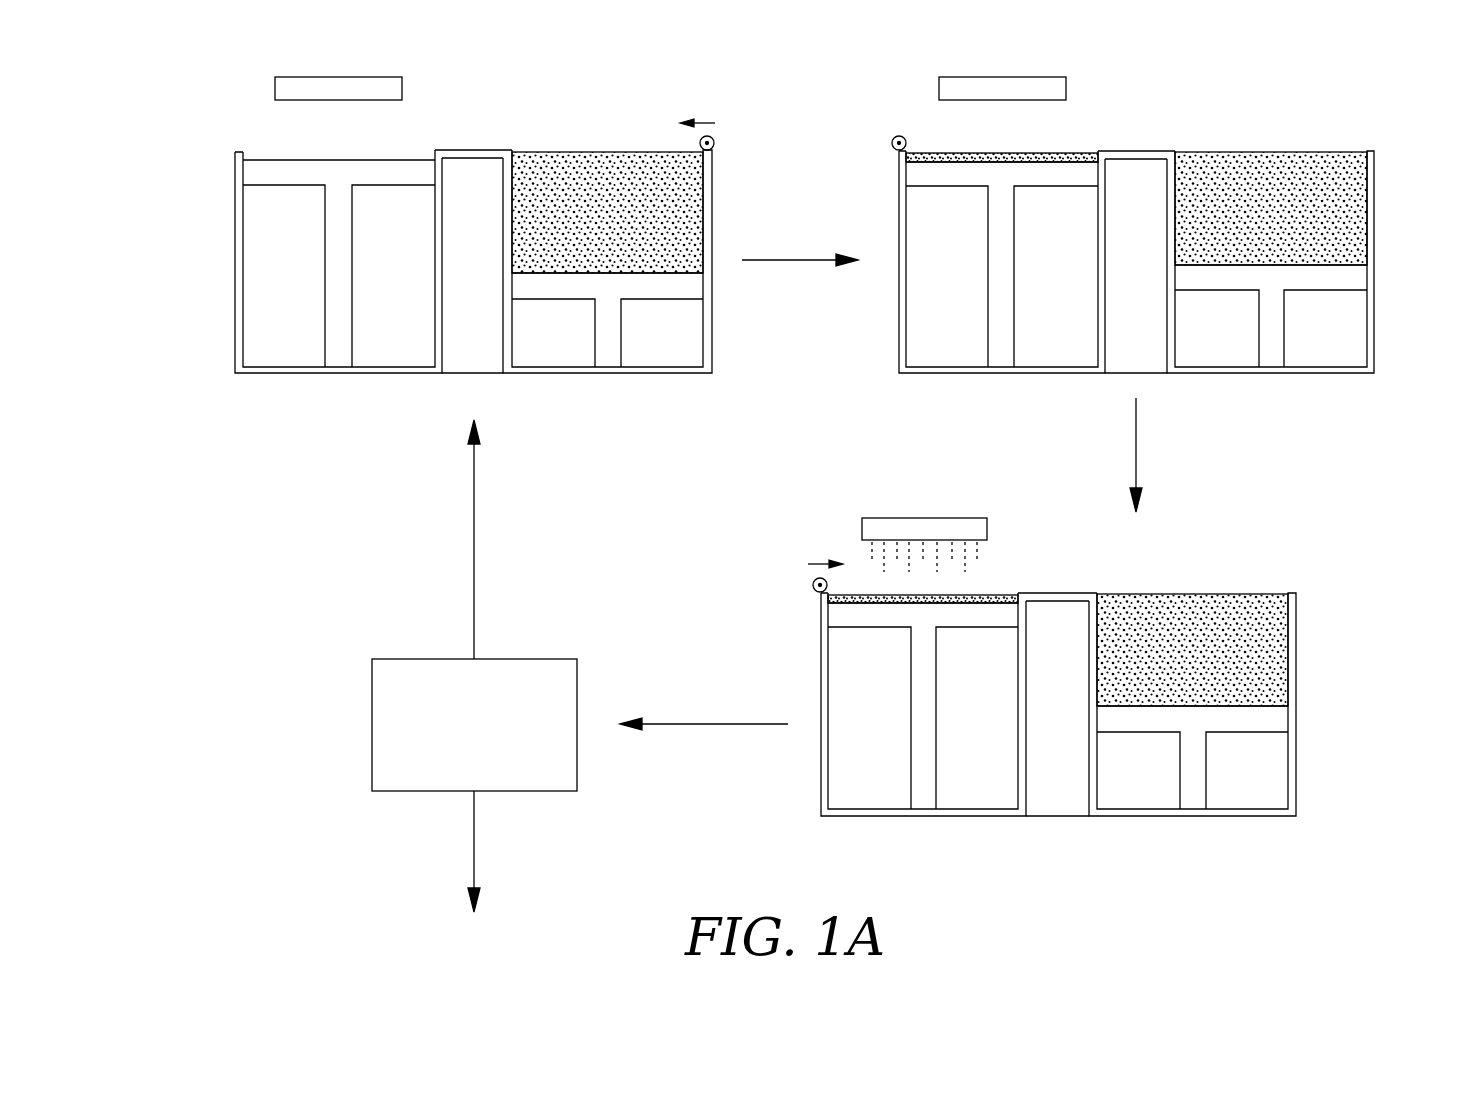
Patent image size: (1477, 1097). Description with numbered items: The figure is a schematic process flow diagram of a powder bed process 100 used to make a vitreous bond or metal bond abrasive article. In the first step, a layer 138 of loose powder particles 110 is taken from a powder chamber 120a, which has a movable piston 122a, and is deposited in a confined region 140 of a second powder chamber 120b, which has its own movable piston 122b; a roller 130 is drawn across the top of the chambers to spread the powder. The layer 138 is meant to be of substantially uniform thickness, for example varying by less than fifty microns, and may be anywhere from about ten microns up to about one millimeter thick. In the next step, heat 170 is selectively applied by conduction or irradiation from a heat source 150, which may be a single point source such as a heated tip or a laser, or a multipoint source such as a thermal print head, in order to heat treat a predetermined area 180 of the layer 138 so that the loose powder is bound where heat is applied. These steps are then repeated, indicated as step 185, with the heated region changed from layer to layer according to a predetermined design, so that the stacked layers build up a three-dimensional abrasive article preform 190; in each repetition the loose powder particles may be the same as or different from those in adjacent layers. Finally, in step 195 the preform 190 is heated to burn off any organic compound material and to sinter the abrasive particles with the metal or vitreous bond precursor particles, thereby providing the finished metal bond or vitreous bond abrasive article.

The powder bed process 100 is at (200, 78).
The loose powder particles 110 is at (675, 192).
The powder chamber 120a is at (713, 310).
The powder chamber 120b is at (235, 243).
The movable piston 122a is at (705, 282).
The movable piston 122b is at (243, 175).
The roller 130 is at (714, 143).
The layer 138 is at (968, 151).
The confined region 140 is at (252, 158).
The source of heat 150 is at (392, 88).
The heat 170 is at (868, 558).
The area 180 is at (965, 598).
The repetition step 185 is at (474, 522).
The abrasive article preform 190 is at (446, 741).
The heating step 195 is at (474, 842).